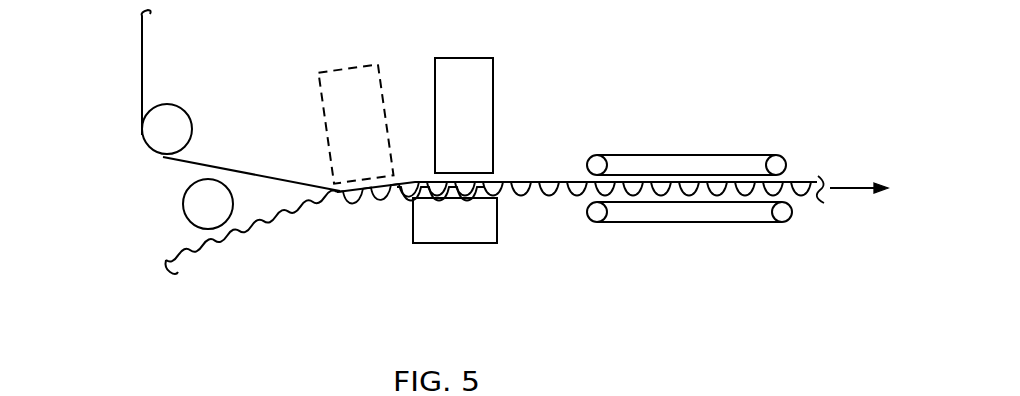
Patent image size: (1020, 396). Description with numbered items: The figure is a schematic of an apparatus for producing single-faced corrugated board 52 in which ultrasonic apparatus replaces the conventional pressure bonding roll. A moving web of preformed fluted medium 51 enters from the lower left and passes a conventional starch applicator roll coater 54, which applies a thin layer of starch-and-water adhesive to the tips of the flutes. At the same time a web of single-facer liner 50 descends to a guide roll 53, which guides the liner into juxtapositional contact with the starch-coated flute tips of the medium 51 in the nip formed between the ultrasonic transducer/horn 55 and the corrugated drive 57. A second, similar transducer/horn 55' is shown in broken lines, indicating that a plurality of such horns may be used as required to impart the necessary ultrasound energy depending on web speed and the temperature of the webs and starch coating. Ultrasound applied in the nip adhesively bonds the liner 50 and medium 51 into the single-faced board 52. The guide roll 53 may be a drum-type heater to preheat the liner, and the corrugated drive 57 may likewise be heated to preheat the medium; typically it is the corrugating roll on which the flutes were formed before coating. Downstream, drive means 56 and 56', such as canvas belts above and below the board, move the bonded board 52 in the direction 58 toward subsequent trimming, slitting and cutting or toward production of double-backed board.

The single-facer liner 50 is at (142, 62).
The preformed fluted medium 51 is at (220, 245).
The single-faced corrugated board 52 is at (518, 178).
The guide roll 53 is at (178, 122).
The starch applicator roll coater 54 is at (186, 200).
The ultrasonic transducer/horn 55 is at (423, 98).
The additional transducer/horn 55' is at (355, 123).
The drive means 56 is at (686, 146).
The drive means 56' is at (689, 229).
The corrugated drive 57 is at (471, 229).
The direction of movement 58 is at (856, 186).